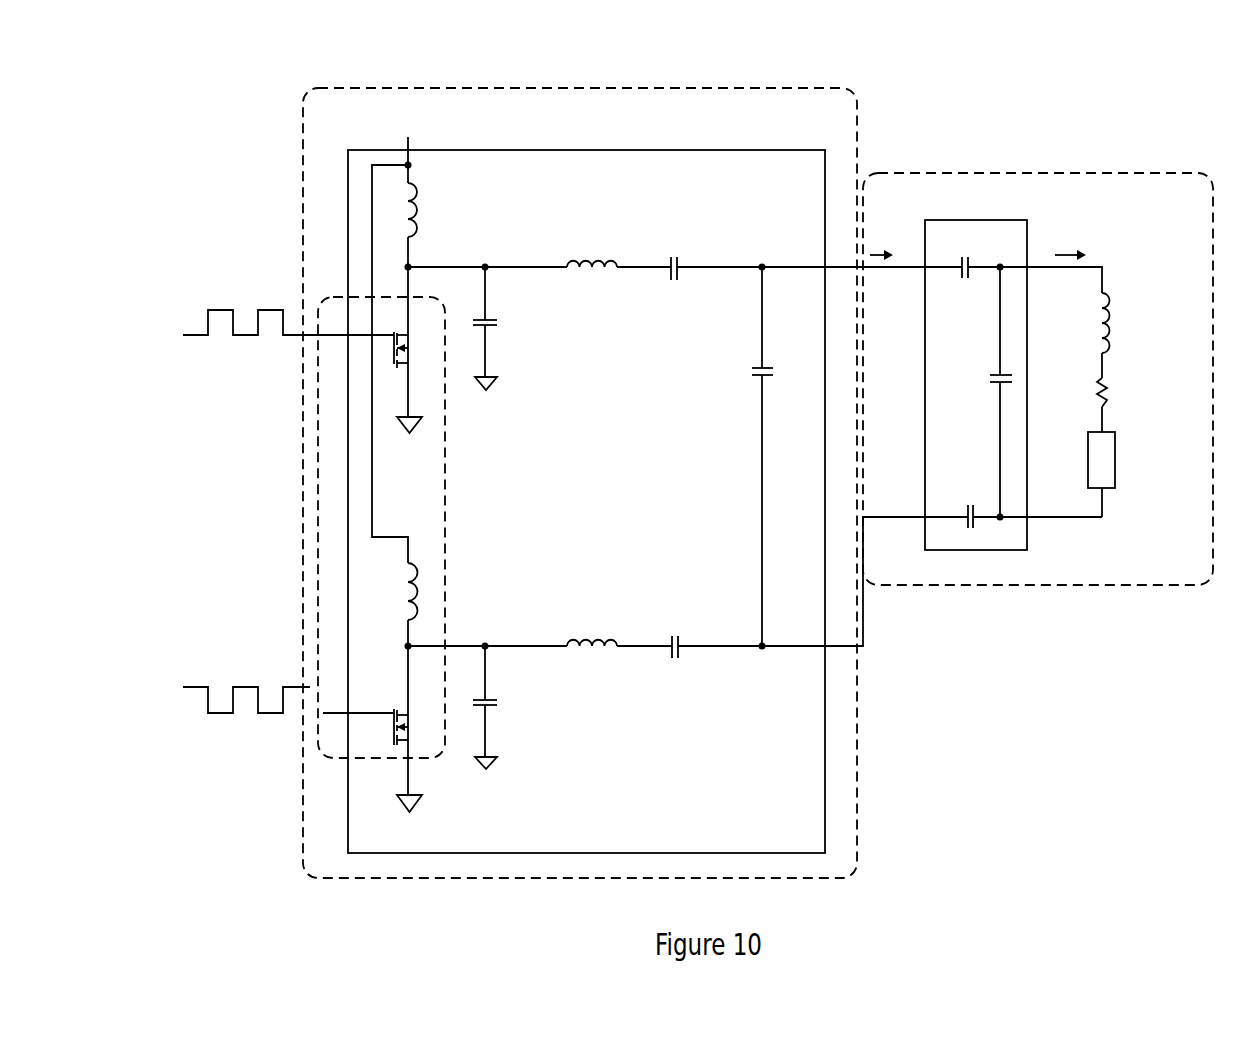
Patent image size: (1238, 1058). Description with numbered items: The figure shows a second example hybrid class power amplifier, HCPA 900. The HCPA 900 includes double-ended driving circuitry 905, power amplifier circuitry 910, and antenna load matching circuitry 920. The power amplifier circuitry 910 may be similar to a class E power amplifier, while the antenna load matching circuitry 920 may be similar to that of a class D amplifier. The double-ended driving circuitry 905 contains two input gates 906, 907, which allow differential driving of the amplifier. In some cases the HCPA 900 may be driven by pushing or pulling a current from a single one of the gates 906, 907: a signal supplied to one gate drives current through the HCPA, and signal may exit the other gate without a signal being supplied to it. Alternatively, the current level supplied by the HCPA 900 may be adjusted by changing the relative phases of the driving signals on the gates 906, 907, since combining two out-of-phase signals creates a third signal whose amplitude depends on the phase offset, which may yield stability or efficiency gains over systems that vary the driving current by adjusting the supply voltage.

The second example HCPA 900 is at (119, 79).
The power amplifier circuitry 910 is at (380, 88).
The double-ended driving circuitry 905 is at (360, 297).
The gate 906 is at (400, 364).
The gate 907 is at (394, 711).
The antenna load matching circuitry 920 is at (975, 173).